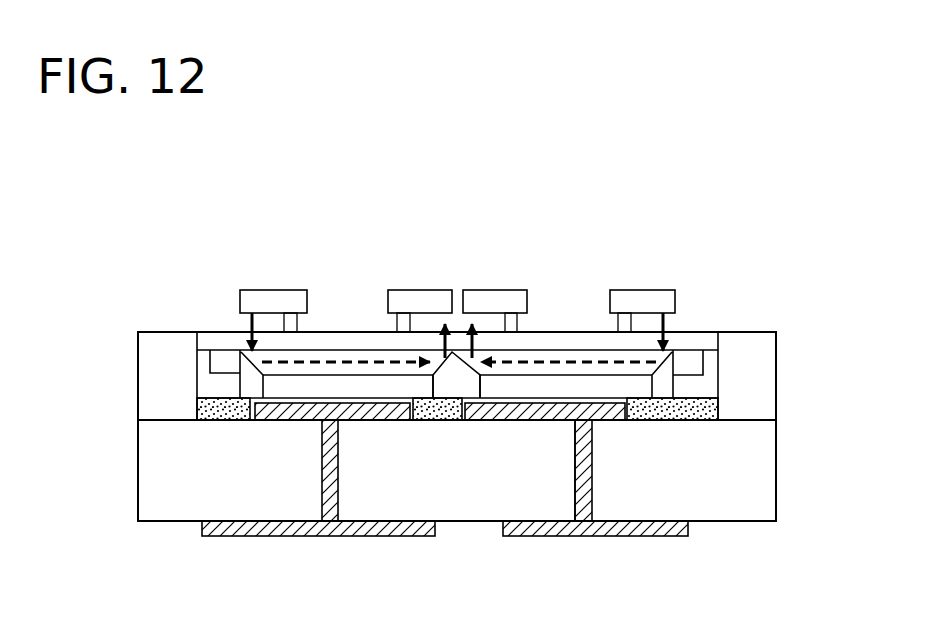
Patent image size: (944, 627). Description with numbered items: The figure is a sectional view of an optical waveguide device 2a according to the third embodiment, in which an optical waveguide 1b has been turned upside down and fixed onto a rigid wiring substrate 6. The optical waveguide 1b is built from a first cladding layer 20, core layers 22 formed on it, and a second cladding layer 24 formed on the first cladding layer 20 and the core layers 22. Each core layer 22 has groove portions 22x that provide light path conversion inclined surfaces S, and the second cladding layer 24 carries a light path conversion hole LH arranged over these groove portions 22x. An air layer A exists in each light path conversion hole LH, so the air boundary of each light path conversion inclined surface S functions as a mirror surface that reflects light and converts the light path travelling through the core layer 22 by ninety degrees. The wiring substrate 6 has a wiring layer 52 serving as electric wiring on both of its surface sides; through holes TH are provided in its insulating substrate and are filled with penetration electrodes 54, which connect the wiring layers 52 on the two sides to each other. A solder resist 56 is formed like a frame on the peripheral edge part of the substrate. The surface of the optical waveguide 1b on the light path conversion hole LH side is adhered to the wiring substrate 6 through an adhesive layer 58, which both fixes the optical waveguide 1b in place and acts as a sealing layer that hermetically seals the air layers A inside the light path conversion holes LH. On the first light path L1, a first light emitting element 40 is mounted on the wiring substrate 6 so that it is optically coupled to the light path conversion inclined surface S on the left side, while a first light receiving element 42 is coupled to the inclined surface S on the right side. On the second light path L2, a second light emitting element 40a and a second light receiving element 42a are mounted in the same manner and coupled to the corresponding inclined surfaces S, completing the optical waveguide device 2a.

The optical waveguide device 2a is at (480, 122).
The optical waveguide 1b is at (566, 330).
The wiring substrate 6 is at (850, 335).
The first light path L1 is at (455, 205).
The second light path L2 is at (705, 205).
The first cladding layer 20 is at (303, 342).
The core layer 22 is at (321, 354).
The groove portion 22x is at (239, 362).
The second cladding layer 24 is at (338, 379).
The first light emitting element 40 is at (255, 302).
The first light receiving element 42 is at (410, 302).
The second light receiving element 42a is at (490, 302).
The second light emitting element 40a is at (647, 302).
The solder resist 56 is at (765, 380).
The adhesive layer 58 is at (697, 417).
The wiring layer 52 is at (622, 420).
The penetration electrode 54 is at (587, 487).
The through hole TH is at (574, 460).
The light path conversion inclined surface S is at (258, 373).
The light path conversion hole LH is at (240, 386).
The air layer A is at (252, 394).